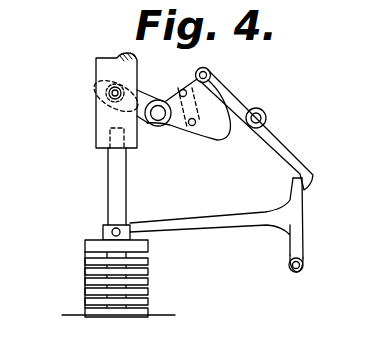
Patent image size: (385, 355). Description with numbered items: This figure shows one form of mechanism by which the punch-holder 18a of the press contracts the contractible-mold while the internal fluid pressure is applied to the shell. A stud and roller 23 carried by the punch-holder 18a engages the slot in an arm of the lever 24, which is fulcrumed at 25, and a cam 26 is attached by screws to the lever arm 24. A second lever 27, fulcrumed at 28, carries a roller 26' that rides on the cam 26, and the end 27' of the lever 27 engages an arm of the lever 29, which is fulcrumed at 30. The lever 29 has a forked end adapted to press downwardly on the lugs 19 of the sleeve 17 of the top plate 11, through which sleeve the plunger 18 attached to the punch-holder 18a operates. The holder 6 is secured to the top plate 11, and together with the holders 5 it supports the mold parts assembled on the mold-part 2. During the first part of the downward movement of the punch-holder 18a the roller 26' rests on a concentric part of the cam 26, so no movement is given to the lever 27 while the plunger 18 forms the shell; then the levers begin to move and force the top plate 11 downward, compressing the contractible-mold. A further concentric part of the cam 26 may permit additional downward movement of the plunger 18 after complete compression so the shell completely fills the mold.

The punch-holder 18a is at (100, 68).
The stud and roller 23 is at (108, 93).
The lever 24 is at (142, 92).
The fulcrum 25 is at (158, 122).
The cam 26 is at (188, 130).
The roller 26' is at (226, 66).
The lever 27 is at (256, 130).
The end of lever 27' is at (322, 164).
The fulcrum 28 is at (266, 116).
The lever 29 is at (222, 218).
The fulcrum 30 is at (292, 272).
The plunger 18 is at (118, 184).
The sleeve 17 is at (103, 234).
The lugs 19 is at (111, 230).
The top plate 11 is at (145, 245).
The holders 5 is at (148, 262).
The holder 6 is at (85, 246).
The mold-part 2 is at (145, 313).